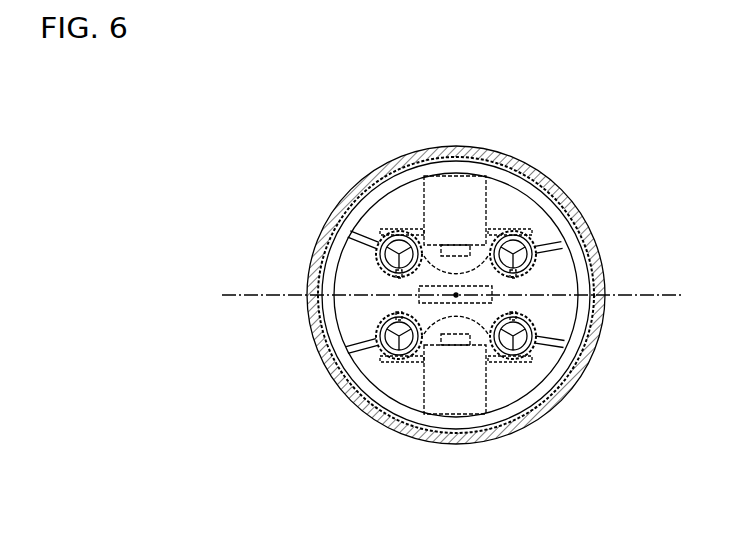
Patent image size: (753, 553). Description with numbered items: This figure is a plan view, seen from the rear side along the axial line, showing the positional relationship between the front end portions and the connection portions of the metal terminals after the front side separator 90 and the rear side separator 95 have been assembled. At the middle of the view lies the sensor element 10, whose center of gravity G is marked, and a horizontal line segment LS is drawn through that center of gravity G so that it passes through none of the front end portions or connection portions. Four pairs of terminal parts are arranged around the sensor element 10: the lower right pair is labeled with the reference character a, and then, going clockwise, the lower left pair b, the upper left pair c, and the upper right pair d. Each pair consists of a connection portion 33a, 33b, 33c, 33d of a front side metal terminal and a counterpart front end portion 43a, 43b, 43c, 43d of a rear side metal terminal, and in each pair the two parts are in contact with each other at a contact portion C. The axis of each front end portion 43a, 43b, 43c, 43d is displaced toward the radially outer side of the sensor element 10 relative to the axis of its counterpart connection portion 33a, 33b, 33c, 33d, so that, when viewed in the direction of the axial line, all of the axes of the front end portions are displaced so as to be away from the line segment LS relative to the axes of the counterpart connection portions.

The sensor element 10 is at (455, 295).
The front side separator 90 is at (344, 308).
The rear side separator 95 is at (309, 268).
The center of gravity of the sensor element G is at (456, 295).
The line segment LS is at (637, 293).
The contact portion C is at (394, 228).
The first connection portion 33a is at (566, 341).
The first connection portion 33b is at (352, 350).
The first connection portion 33c is at (358, 238).
The first connection portion 33d is at (560, 240).
The second connection portion 43a is at (507, 364).
The second connection portion 43b is at (375, 352).
The second connection portion 43c is at (381, 229).
The second connection portion 43d is at (527, 228).